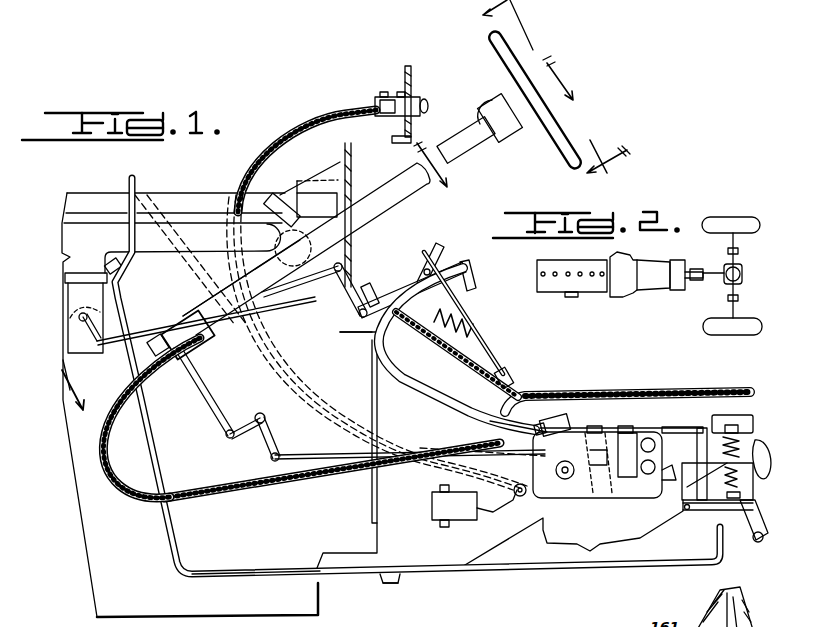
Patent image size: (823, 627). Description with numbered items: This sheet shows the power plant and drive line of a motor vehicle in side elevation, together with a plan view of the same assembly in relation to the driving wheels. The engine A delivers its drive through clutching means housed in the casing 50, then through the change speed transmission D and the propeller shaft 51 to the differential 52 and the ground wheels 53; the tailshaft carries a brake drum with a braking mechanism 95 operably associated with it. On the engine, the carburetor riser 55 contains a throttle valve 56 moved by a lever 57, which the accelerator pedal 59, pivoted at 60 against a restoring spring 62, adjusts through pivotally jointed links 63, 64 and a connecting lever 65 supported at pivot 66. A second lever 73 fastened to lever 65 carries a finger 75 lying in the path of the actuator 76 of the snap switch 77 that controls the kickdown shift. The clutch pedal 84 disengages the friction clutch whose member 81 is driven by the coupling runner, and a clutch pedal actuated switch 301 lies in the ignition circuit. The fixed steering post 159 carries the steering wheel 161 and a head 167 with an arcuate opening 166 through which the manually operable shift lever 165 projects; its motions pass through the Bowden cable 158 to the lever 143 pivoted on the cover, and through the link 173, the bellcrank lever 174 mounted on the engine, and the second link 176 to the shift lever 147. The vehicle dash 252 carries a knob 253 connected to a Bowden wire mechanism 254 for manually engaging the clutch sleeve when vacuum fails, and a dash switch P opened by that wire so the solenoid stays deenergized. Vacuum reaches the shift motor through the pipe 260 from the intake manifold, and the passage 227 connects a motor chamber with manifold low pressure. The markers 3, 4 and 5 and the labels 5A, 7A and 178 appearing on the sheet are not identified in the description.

In FIG. 1, the engine A is at (82, 487).
In FIG. 2, the engine A is at (572, 294).
In FIG. 1, the panel 5A is at (196, 228).
In FIG. 1, the snap switch 77 is at (193, 248).
In FIG. 1, the passage 227 is at (127, 195).
In FIG. 1, the pipe 260 is at (268, 571).
In FIG. 1, the casing 50 is at (395, 581).
In FIG. 2, the casing 50 is at (628, 293).
In FIG. 1, the Bowden wire mechanism 254 is at (330, 116).
In FIG. 1, the dash switch P is at (386, 98).
In FIG. 1, the vehicle dash 252 is at (412, 70).
In FIG. 1, the knob 253 is at (430, 96).
In FIG. 1, the head 167 is at (486, 112).
In FIG. 1, the steering wheel 161 is at (566, 160).
In FIG. 1, the section line 4- 4 is at (536, 99).
In FIG. 1, the section line 3- 3 is at (501, 131).
In FIG. 1, the steering post 159 is at (434, 170).
In FIG. 1, the finger 75 is at (241, 278).
In FIG. 1, the plate 7A is at (307, 215).
In FIG. 1, the actuator 76 is at (310, 189).
In FIG. 1, the ratchet lever 5 is at (121, 368).
In FIG. 1, the carburetor riser 55 is at (80, 342).
In FIG. 1, the throttle valve 56 is at (70, 304).
In FIG. 1, the lever 57 is at (72, 355).
In FIG. 1, the link 64 is at (313, 302).
In FIG. 1, the second lever 73 is at (325, 282).
In FIG. 1, the connecting lever 65 is at (338, 334).
In FIG. 1, the pivot 66 is at (342, 266).
In FIG. 1, the link 63 is at (396, 292).
In FIG. 1, the accelerator pedal 59 is at (436, 254).
In FIG. 1, the clutch pedal 84 is at (477, 272).
In FIG. 1, the change speed transmission D is at (582, 405).
In FIG. 2, the change speed transmission D is at (662, 288).
In FIG. 1, the restoring spring 62 is at (470, 320).
In FIG. 1, the clutch member 81 is at (478, 378).
In FIG. 1, the pivot 60 is at (510, 374).
In FIG. 1, the link 173 is at (213, 418).
In FIG. 1, the lever 178 is at (264, 413).
In FIG. 1, the bellcrank lever 174 is at (250, 442).
In FIG. 1, the second link 176 is at (331, 478).
In FIG. 1, the Bowden cable 158 is at (248, 495).
In FIG. 1, the clutch pedal actuated switch 301 is at (430, 506).
In FIG. 1, the shift lever 165 is at (512, 590).
In FIG. 1, the arcuate opening 166 is at (476, 617).
In FIG. 1, the lever 143 is at (540, 420).
In FIG. 1, the shift lever 147 is at (620, 452).
In FIG. 1, the propeller shaft 51 is at (752, 452).
In FIG. 2, the propeller shaft 51 is at (722, 270).
In FIG. 1, the braking mechanism 95 is at (750, 521).
In FIG. 2, the differential 52 is at (742, 274).
In FIG. 2, the vehicle ground wheels 53 is at (746, 218).